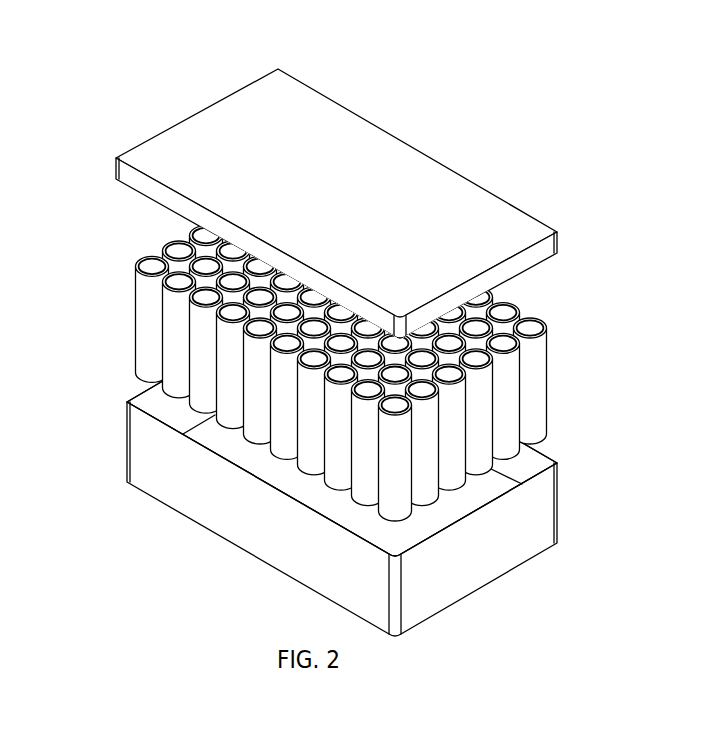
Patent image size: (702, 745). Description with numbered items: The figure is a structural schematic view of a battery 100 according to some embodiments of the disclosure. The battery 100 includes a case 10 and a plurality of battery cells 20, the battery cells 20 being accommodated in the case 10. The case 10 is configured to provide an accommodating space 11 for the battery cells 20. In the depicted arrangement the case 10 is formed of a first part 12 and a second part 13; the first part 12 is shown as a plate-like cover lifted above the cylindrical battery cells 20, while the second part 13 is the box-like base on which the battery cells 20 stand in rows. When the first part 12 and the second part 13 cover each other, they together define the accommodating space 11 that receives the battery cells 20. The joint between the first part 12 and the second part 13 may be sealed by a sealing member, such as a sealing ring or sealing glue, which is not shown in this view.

The battery 100 is at (361, 28).
The case 10 is at (63, 285).
The accommodating space 11 is at (492, 482).
The first part 12 is at (137, 183).
The second part 13 is at (132, 437).
The battery cells 20 is at (528, 327).